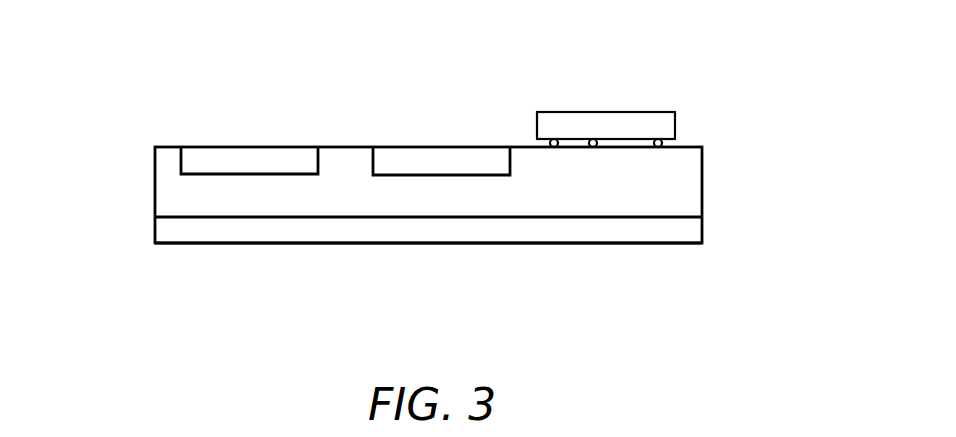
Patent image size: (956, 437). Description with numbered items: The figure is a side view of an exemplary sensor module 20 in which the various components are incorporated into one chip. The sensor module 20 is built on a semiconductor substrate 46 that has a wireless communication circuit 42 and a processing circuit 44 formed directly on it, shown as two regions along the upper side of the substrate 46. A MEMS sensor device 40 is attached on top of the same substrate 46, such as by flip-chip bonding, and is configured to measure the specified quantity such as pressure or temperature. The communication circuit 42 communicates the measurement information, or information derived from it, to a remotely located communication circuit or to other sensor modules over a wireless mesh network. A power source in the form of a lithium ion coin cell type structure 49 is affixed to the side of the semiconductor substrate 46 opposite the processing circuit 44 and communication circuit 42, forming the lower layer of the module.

The sensor module 20 is at (752, 143).
The sensor device 40 is at (598, 110).
The wireless communication circuit 42 is at (242, 158).
The processing circuit 44 is at (432, 157).
The semiconductor substrate 46 is at (153, 201).
The lithium ion coin cell type structure 49 is at (263, 245).